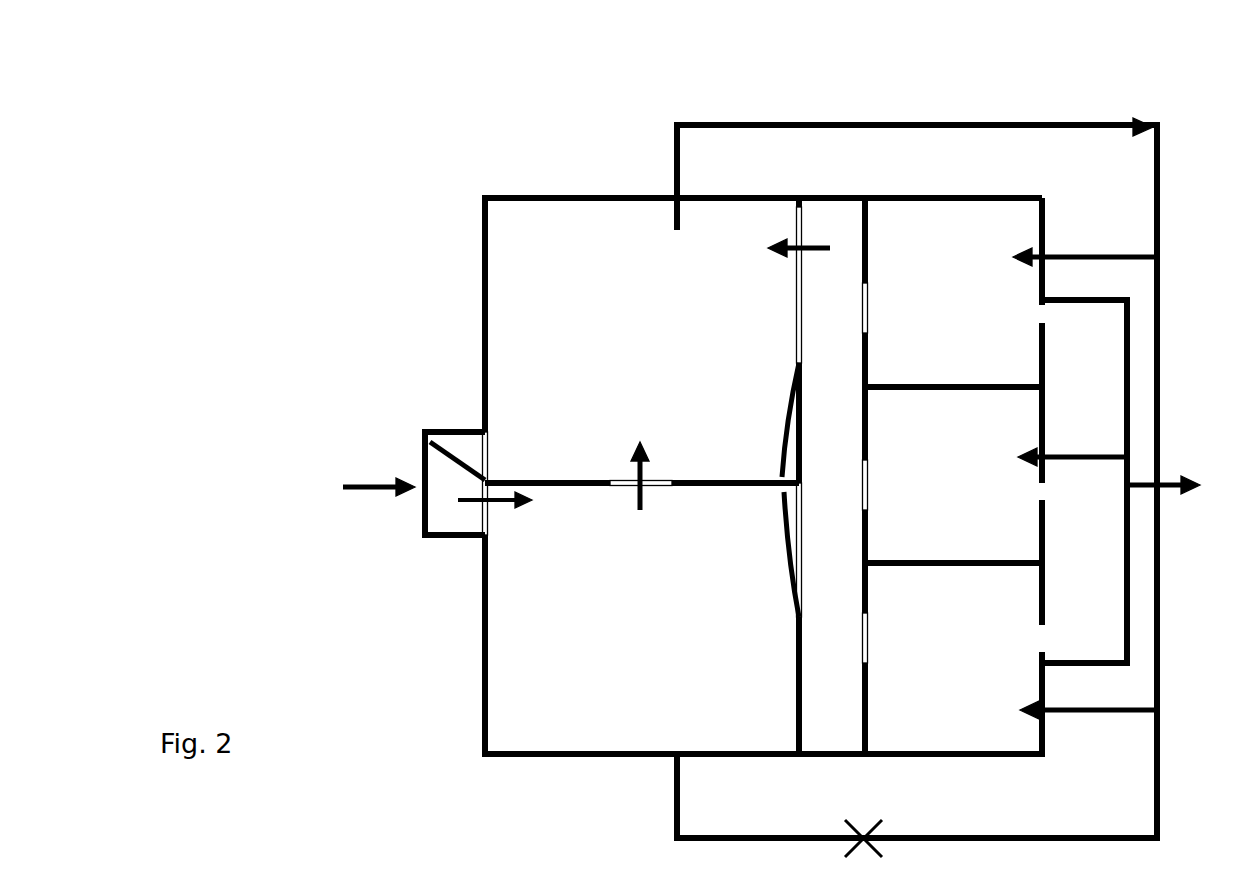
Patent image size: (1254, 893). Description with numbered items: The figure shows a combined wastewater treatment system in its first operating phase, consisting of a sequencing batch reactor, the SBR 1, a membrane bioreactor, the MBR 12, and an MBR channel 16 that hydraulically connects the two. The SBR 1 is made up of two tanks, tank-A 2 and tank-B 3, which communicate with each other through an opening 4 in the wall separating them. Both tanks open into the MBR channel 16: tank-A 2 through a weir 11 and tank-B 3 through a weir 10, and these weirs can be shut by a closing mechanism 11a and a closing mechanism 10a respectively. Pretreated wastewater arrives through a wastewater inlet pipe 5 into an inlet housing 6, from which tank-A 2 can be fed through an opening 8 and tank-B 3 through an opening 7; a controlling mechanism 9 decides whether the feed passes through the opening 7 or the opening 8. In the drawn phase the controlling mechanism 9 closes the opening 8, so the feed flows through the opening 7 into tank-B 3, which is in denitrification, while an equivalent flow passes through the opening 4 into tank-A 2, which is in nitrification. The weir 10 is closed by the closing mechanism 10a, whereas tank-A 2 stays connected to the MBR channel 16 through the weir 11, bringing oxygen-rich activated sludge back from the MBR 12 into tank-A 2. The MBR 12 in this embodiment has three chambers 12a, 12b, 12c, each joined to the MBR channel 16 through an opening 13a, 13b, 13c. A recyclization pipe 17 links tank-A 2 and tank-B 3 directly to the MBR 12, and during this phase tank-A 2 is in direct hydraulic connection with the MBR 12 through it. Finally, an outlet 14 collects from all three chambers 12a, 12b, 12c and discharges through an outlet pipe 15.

The SBR 1 is at (552, 180).
The tank-A 2 is at (485, 257).
The tank-B 3 is at (483, 628).
The opening 4 is at (650, 480).
The wastewater inlet pipe 5 is at (377, 483).
The inlet housing 6 is at (425, 513).
The opening 7 is at (487, 512).
The opening 8 is at (490, 458).
The controlling mechanism 9 is at (455, 455).
The weir 10 is at (797, 620).
The closing mechanism 10a is at (790, 617).
The weir 11 is at (797, 297).
The closing mechanism 11a is at (788, 412).
The MBR 12 is at (979, 170).
The chamber 12a is at (1043, 237).
The chamber 12b is at (1047, 532).
The chamber 12c is at (1045, 733).
The opening 13a is at (870, 307).
The opening 13b is at (870, 480).
The opening 13c is at (870, 637).
The outlet 14 is at (1127, 397).
The outlet pipe 15 is at (1172, 478).
The MBR channel 16 is at (836, 180).
The recyclization pipe 17 is at (675, 162).